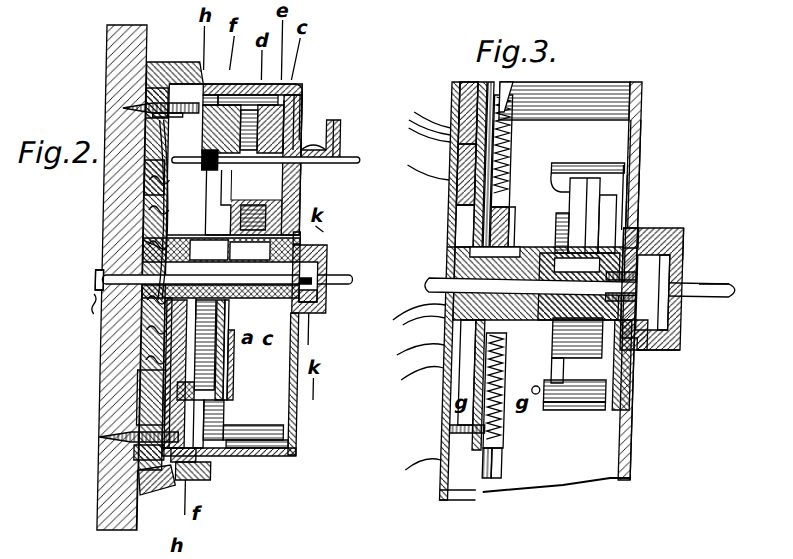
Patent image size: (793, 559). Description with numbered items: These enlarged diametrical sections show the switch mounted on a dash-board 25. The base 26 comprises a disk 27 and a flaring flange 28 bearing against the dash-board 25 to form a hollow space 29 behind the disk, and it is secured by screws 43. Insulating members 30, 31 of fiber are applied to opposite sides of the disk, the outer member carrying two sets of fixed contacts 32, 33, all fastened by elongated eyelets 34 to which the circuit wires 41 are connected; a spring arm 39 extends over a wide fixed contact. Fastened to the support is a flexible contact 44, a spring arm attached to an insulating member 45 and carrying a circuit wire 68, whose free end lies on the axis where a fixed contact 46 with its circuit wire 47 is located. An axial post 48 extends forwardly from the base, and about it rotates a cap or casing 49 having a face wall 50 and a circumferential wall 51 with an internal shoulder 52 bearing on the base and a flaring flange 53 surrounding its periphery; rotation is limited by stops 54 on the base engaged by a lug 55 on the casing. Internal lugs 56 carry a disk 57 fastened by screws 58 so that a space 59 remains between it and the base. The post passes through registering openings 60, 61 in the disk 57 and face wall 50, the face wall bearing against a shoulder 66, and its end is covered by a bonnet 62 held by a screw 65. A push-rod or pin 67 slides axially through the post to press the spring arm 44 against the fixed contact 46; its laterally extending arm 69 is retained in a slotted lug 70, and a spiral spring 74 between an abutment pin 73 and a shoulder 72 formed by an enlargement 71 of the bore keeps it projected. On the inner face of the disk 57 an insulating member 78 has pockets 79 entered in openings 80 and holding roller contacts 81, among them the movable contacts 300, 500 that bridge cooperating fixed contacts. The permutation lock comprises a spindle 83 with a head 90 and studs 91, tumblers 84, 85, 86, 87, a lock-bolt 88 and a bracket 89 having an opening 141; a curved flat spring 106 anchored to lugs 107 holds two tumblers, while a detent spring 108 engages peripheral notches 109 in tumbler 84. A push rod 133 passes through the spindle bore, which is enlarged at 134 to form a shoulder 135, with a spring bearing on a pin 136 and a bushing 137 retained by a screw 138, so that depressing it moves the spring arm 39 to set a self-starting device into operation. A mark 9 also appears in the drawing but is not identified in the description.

In FIG. 2, the dash-board 25 is at (102, 386).
In FIG. 2, the base 26 is at (188, 68).
In FIG. 3, the base 26 is at (447, 482).
In FIG. 2, the disk 27 is at (207, 408).
In FIG. 3, the disk 27 is at (458, 220).
In FIG. 2, the flaring flange 28 is at (138, 455).
In FIG. 2, the hollow space 29 is at (140, 400).
In FIG. 2, the outer insulating member 30 is at (227, 428).
In FIG. 3, the outer insulating member 30 is at (494, 480).
In FIG. 2, the inner insulating member 31 is at (143, 345).
In FIG. 3, the inner insulating member 31 is at (440, 405).
In FIG. 3, the fixed contacts 32 is at (448, 178).
In FIG. 3, the fixed contacts 33 is at (448, 120).
In FIG. 3, the eyelets 34 is at (432, 350).
In FIG. 2, the spring arm 39 is at (150, 105).
In FIG. 2, the circuit wires 41 is at (148, 183).
In FIG. 3, the circuit wires 41 is at (404, 236).
In FIG. 2, the screws 43 is at (125, 106).
In FIG. 2, the flexible contact 44 is at (148, 248).
In FIG. 2, the insulating member 45 is at (158, 200).
In FIG. 2, the fixed contact 46 is at (98, 285).
In FIG. 2, the circuit wire 47 is at (92, 300).
In FIG. 2, the post 48 is at (240, 298).
In FIG. 3, the post 48 is at (540, 312).
In FIG. 2, the cap or casing 49 is at (297, 460).
In FIG. 3, the cap or casing 49 is at (630, 82).
In FIG. 2, the face wall 50 is at (300, 423).
In FIG. 3, the face wall 50 is at (638, 443).
In FIG. 2, the circumferential wall 51 is at (256, 458).
In FIG. 3, the circumferential wall 51 is at (575, 484).
In FIG. 2, the internal shoulder 52 is at (206, 482).
In FIG. 2, the flaring flange 53 is at (166, 490).
In FIG. 2, the stops 54 is at (142, 500).
In FIG. 2, the lug 55 is at (200, 490).
In FIG. 2, the internal lugs 56 is at (242, 95).
In FIG. 2, the disk 57 is at (200, 392).
In FIG. 3, the disk 57 is at (570, 412).
In FIG. 2, the screws 58 is at (224, 95).
In FIG. 2, the space 59 is at (250, 436).
In FIG. 3, the space 59 is at (456, 495).
In FIG. 2, the opening 60 is at (221, 250).
In FIG. 3, the opening 60 is at (523, 227).
In FIG. 2, the opening 61 is at (312, 327).
In FIG. 3, the opening 61 is at (632, 232).
In FIG. 2, the bonnet 62 is at (328, 258).
In FIG. 3, the bonnet 62 is at (684, 241).
In FIG. 2, the screw 65 is at (320, 300).
In FIG. 3, the shoulder 66 is at (662, 352).
In FIG. 2, the push-rod or pin 67 is at (354, 280).
In FIG. 3, the push-rod or pin 67 is at (680, 283).
In FIG. 2, the circuit wire 68 is at (143, 180).
In FIG. 2, the laterally extending arm 69 is at (302, 238).
In FIG. 3, the laterally extending arm 69 is at (684, 315).
In FIG. 3, the slotted lug 70 is at (642, 350).
In FIG. 3, the enlargement of bore 71 is at (665, 250).
In FIG. 3, the shoulder 72 is at (579, 286).
In FIG. 3, the abutment pin 73 is at (640, 275).
In FIG. 3, the spiral spring 74 is at (725, 287).
In FIG. 2, the insulating member 78 is at (237, 385).
In FIG. 3, the insulating member 78 is at (450, 248).
In FIG. 2, the pockets 79 is at (218, 336).
In FIG. 3, the pockets 79 is at (555, 220).
In FIG. 2, the openings 80 is at (228, 362).
In FIG. 3, the openings 80 is at (508, 108).
In FIG. 2, the contacts 81 is at (230, 361).
In FIG. 3, the contacts 81 is at (509, 150).
In FIG. 2, the spindle 83 is at (310, 145).
In FIG. 2, the tumbler 84 is at (293, 100).
In FIG. 3, the tumbler 84 is at (573, 178).
In FIG. 2, the tumbler 85 is at (301, 115).
In FIG. 3, the tumbler 85 is at (604, 195).
In FIG. 2, the tumbler 86 is at (301, 150).
In FIG. 3, the tumbler 86 is at (623, 165).
In FIG. 2, the tumbler 87 is at (283, 205).
In FIG. 3, the tumbler 87 is at (627, 190).
In FIG. 2, the lock-bolt 88 is at (268, 222).
In FIG. 2, the lock-bolt support or bracket 89 is at (301, 215).
In FIG. 2, the head or enlargement 90 is at (339, 130).
In FIG. 2, the studs or pins 91 is at (150, 115).
In FIG. 2, the spring 106 is at (286, 98).
In FIG. 3, the spring 106 is at (612, 392).
In FIG. 3, the lugs 107 is at (628, 135).
In FIG. 2, the detent spring 108 is at (270, 92).
In FIG. 3, the detent spring 108 is at (555, 373).
In FIG. 3, the peripheral notches 109 is at (538, 283).
In FIG. 2, the push rod 133 is at (358, 160).
In FIG. 3, the enlargement of bore 134 is at (403, 122).
In FIG. 2, the shoulder 135 is at (334, 145).
In FIG. 3, the pin 136 is at (404, 162).
In FIG. 2, the bushing 137 is at (301, 170).
In FIG. 2, the screw 138 is at (251, 258).
In FIG. 3, the screw 138 is at (410, 110).
In FIG. 2, the opening 141 is at (234, 159).
In FIG. 3, the movable contact 300 is at (542, 396).
In FIG. 3, the movable contact 500 is at (520, 200).
In FIG. 3, the gap 9 is at (469, 376).